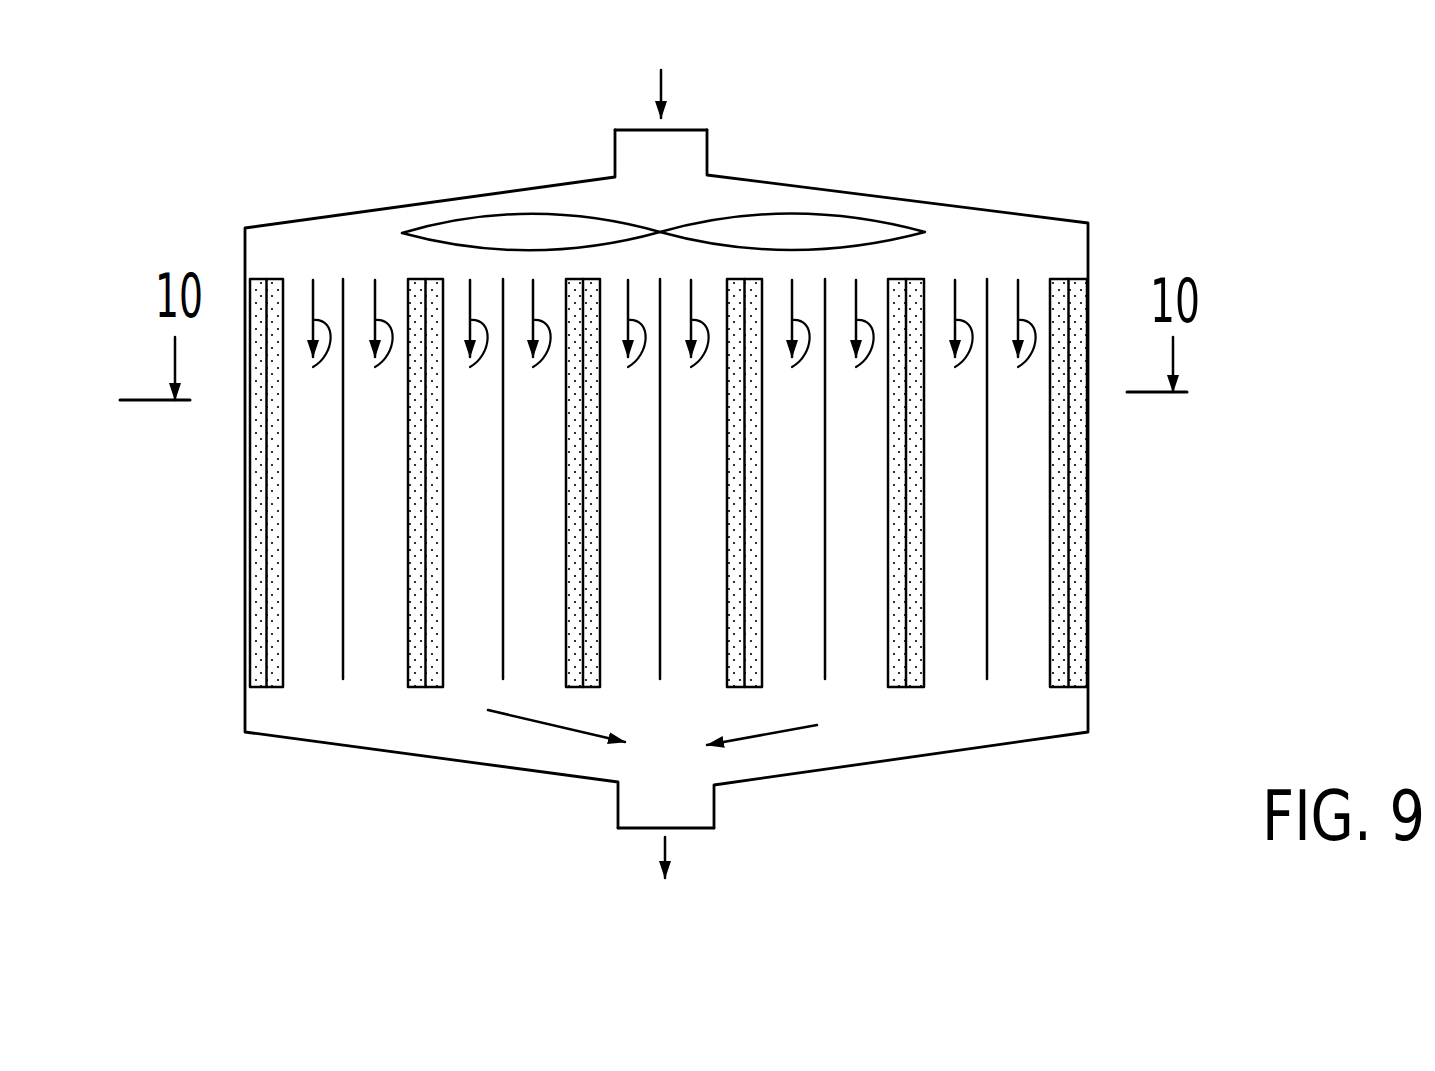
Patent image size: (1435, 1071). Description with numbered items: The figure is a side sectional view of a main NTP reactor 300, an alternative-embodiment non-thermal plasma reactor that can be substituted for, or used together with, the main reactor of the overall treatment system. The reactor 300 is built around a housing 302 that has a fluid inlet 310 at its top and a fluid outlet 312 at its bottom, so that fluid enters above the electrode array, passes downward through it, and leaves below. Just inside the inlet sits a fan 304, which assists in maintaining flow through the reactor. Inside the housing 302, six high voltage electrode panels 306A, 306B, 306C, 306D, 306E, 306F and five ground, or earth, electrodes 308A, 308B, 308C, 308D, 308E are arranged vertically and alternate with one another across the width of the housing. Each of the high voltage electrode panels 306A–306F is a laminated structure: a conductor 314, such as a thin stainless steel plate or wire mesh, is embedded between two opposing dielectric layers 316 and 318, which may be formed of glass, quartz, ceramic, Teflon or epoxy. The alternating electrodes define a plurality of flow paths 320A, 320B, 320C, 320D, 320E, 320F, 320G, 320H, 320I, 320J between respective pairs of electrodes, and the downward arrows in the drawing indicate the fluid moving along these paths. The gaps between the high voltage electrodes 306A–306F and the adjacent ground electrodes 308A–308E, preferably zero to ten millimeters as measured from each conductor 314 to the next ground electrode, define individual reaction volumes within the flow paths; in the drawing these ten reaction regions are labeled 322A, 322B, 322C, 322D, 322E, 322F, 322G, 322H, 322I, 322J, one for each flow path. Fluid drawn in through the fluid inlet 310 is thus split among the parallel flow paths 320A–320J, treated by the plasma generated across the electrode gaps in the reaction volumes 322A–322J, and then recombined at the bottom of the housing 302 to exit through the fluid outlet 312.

The main NTP reactor 300 is at (440, 135).
The housing 302 is at (400, 205).
The fan 304 is at (735, 218).
The high voltage electrode panel 306A is at (270, 688).
The high voltage electrode panel 306B is at (418, 688).
The high voltage electrode panel 306C is at (577, 688).
The high voltage electrode panel 306D is at (733, 688).
The high voltage electrode panel 306E is at (902, 688).
The high voltage electrode panel 306F is at (1053, 688).
The ground electrode 308A is at (343, 630).
The ground electrode 308B is at (503, 630).
The ground electrode 308C is at (660, 628).
The ground electrode 308D is at (825, 608).
The ground electrode 308E is at (1027, 637).
The fluid inlet 310 is at (693, 130).
The fluid outlet 312 is at (714, 828).
The conductor 314 is at (263, 495).
The dielectric layer 316 is at (257, 450).
The dielectric layer 318 is at (272, 447).
The flow path 320A is at (312, 340).
The flow path 320B is at (373, 340).
The flow path 320C is at (474, 344).
The flow path 320D is at (537, 344).
The flow path 320E is at (630, 346).
The flow path 320F is at (693, 346).
The flow path 320G is at (794, 347).
The flow path 320H is at (857, 347).
The flow path 320I is at (957, 349).
The flow path 320J is at (1018, 349).
The flow channel 322A is at (335, 525).
The flow channel 322B is at (398, 573).
The flow channel 322C is at (495, 523).
The flow channel 322D is at (560, 570).
The flow channel 322E is at (650, 527).
The flow channel 322F is at (718, 573).
The flow channel 322G is at (820, 527).
The flow channel 322H is at (883, 573).
The flow channel 322I is at (978, 518).
The flow channel 322J is at (1043, 552).